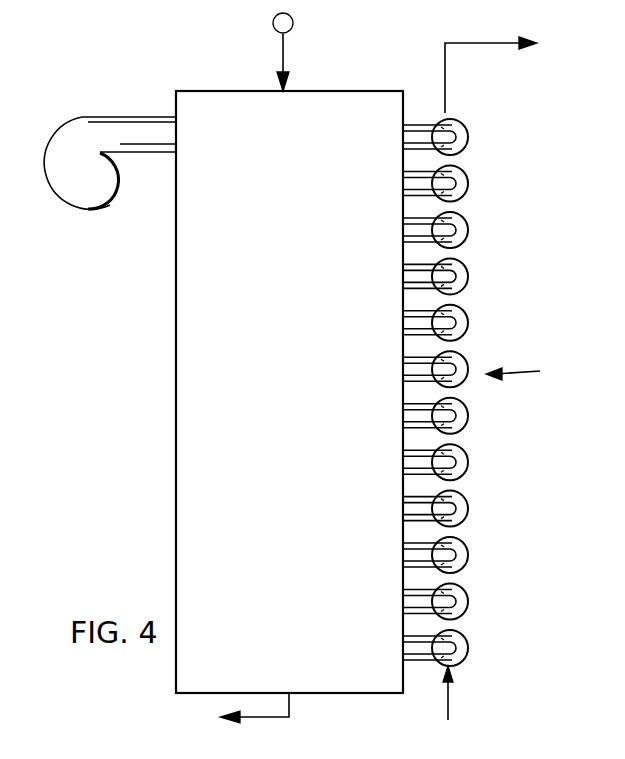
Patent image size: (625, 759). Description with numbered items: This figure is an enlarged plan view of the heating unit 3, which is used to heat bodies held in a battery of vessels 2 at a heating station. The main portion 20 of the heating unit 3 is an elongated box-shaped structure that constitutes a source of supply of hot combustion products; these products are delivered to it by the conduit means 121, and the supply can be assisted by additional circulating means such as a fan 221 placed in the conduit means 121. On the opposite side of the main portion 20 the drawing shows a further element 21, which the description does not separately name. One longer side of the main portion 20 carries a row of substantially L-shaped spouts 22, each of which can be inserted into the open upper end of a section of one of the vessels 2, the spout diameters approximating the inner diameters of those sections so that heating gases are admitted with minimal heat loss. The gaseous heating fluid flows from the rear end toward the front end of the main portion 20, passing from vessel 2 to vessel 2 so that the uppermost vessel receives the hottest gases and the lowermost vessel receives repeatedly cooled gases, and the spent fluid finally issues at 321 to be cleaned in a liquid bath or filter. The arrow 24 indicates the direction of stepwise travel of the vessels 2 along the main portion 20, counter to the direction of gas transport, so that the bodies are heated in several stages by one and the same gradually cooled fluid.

The vessel 2 is at (429, 392).
The heating unit 3 is at (525, 370).
The main portion 20 is at (176, 380).
The blower 21 is at (80, 212).
The spout 22 is at (412, 186).
The arrow 24 is at (448, 690).
The conduit means 121 is at (283, 57).
The fan 221 is at (292, 27).
The outlet 321 is at (266, 717).